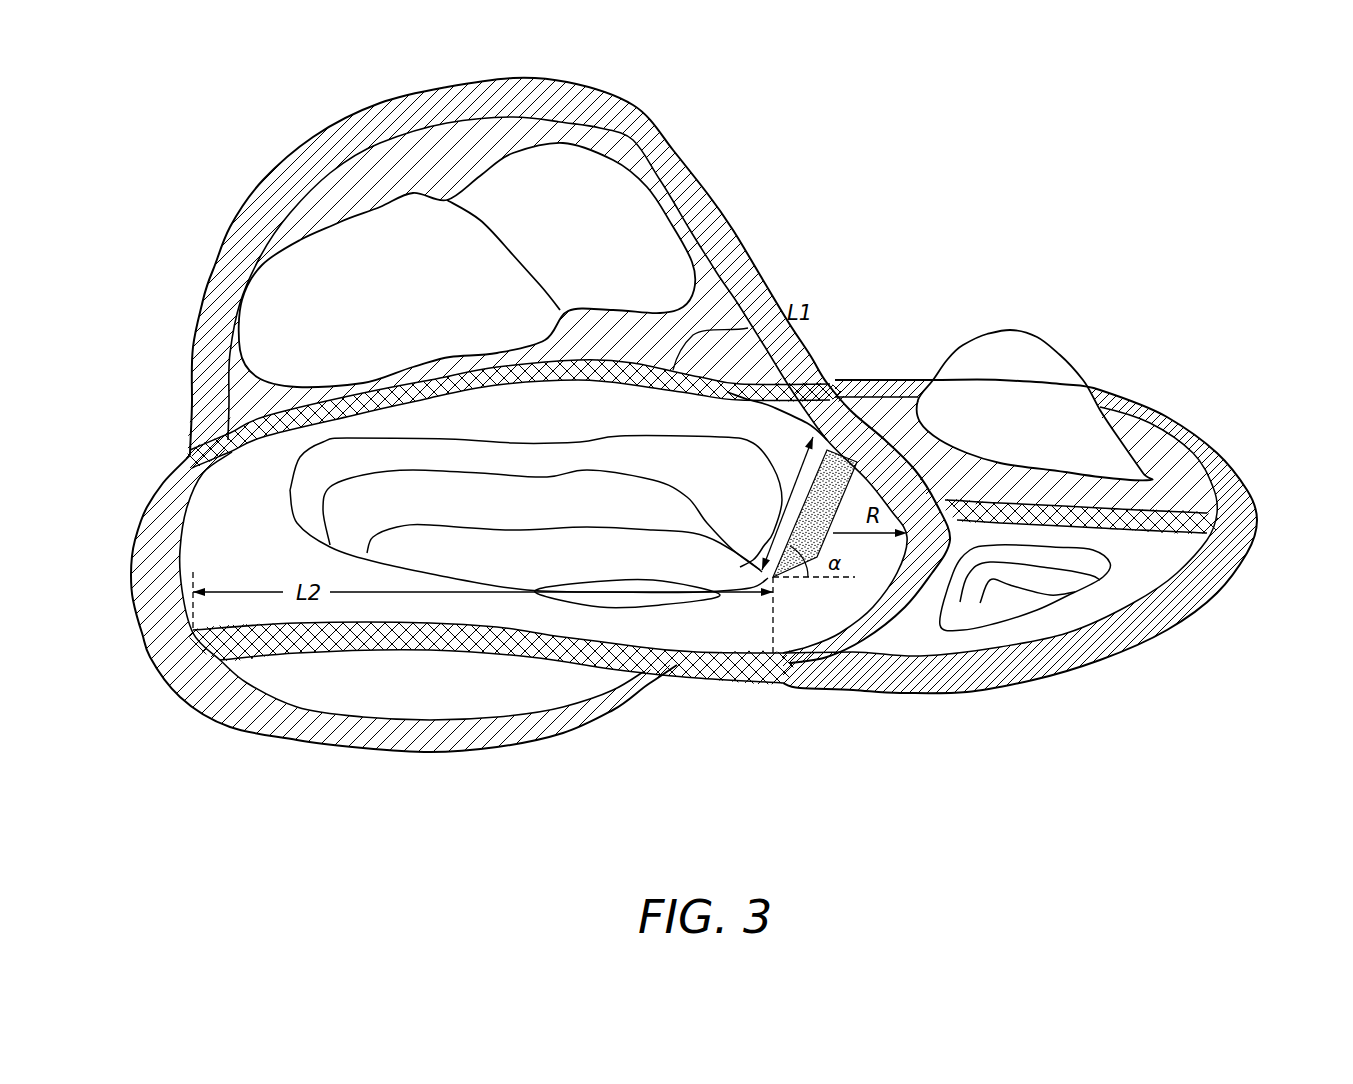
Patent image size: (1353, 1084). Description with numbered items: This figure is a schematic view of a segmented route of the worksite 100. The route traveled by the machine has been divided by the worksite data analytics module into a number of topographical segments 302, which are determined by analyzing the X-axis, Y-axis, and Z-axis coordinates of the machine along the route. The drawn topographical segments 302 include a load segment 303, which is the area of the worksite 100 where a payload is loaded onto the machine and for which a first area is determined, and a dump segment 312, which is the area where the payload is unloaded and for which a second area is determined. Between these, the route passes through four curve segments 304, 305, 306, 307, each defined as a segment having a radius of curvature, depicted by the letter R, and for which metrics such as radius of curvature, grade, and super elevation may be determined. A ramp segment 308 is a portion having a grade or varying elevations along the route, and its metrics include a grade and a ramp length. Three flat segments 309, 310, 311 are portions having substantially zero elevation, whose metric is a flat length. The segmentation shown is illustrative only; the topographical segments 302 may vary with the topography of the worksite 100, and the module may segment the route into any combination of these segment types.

The worksite 100 is at (1150, 180).
The topographical segments 302 is at (181, 375).
The load segment 303 is at (1150, 448).
The curve segment 304 is at (1062, 655).
The curve segment 305 is at (622, 110).
The curve segment 306 is at (843, 628).
The curve segment 307 is at (253, 712).
The ramp segment 308 is at (827, 450).
The flat segment 309 is at (1210, 520).
The flat segment 310 is at (687, 681).
The flat segment 311 is at (777, 573).
The dump segment 312 is at (613, 163).